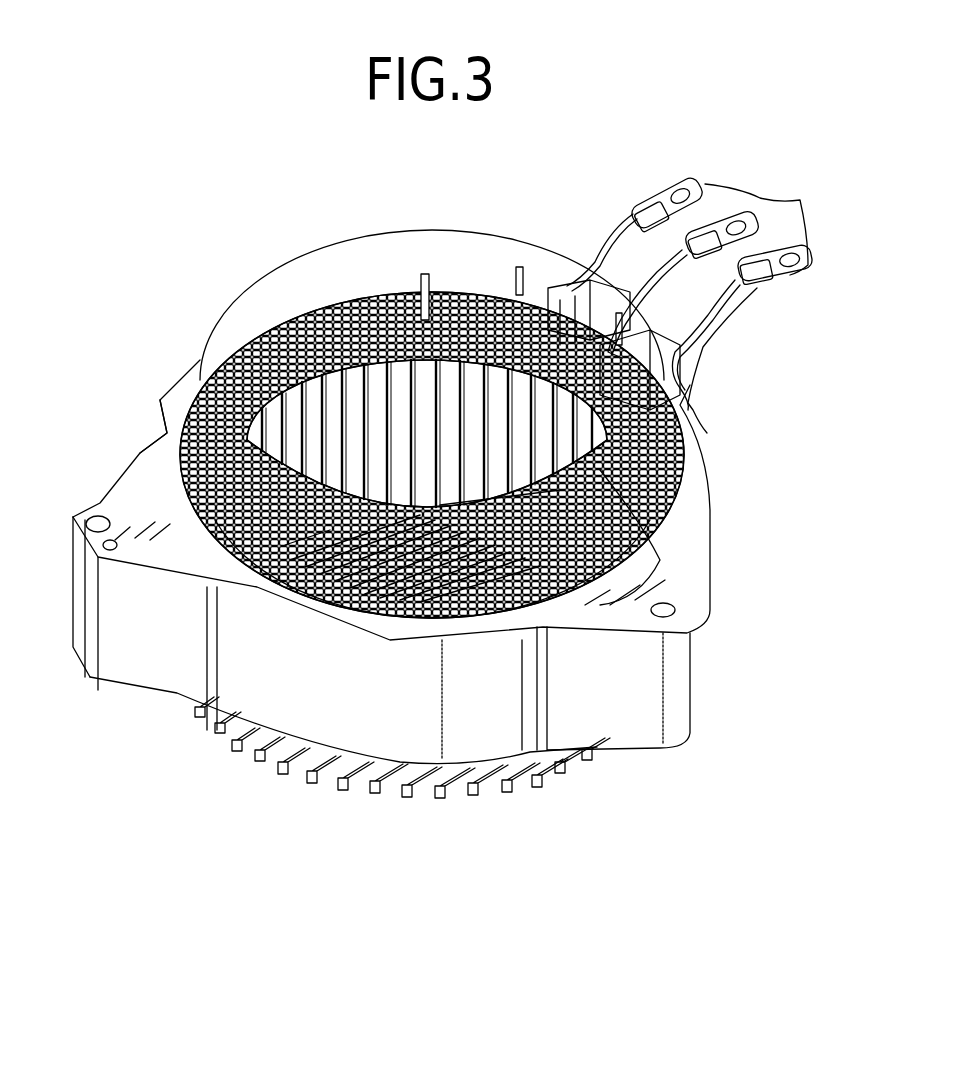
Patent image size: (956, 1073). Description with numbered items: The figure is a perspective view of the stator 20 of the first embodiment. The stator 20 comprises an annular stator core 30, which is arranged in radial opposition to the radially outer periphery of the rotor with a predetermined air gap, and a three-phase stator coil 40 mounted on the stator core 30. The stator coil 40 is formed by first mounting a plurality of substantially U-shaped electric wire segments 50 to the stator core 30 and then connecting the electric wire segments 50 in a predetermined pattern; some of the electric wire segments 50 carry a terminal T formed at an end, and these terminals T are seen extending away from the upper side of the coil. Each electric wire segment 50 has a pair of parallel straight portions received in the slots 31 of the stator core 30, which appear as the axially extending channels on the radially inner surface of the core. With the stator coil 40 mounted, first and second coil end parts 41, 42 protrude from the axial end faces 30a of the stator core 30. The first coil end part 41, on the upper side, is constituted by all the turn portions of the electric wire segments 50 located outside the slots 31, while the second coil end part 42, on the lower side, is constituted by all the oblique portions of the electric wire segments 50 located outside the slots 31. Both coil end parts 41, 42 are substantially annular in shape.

The stator 20 is at (231, 239).
The stator core 30 is at (641, 753).
The axial end faces of the stator core 30a is at (167, 433).
The slots 31 is at (297, 442).
The stator coil 40 is at (677, 455).
The first coil end part 41 is at (660, 512).
The second coil end part 42 is at (397, 788).
The electric wire segments 50 is at (279, 577).
The terminal T is at (772, 192).